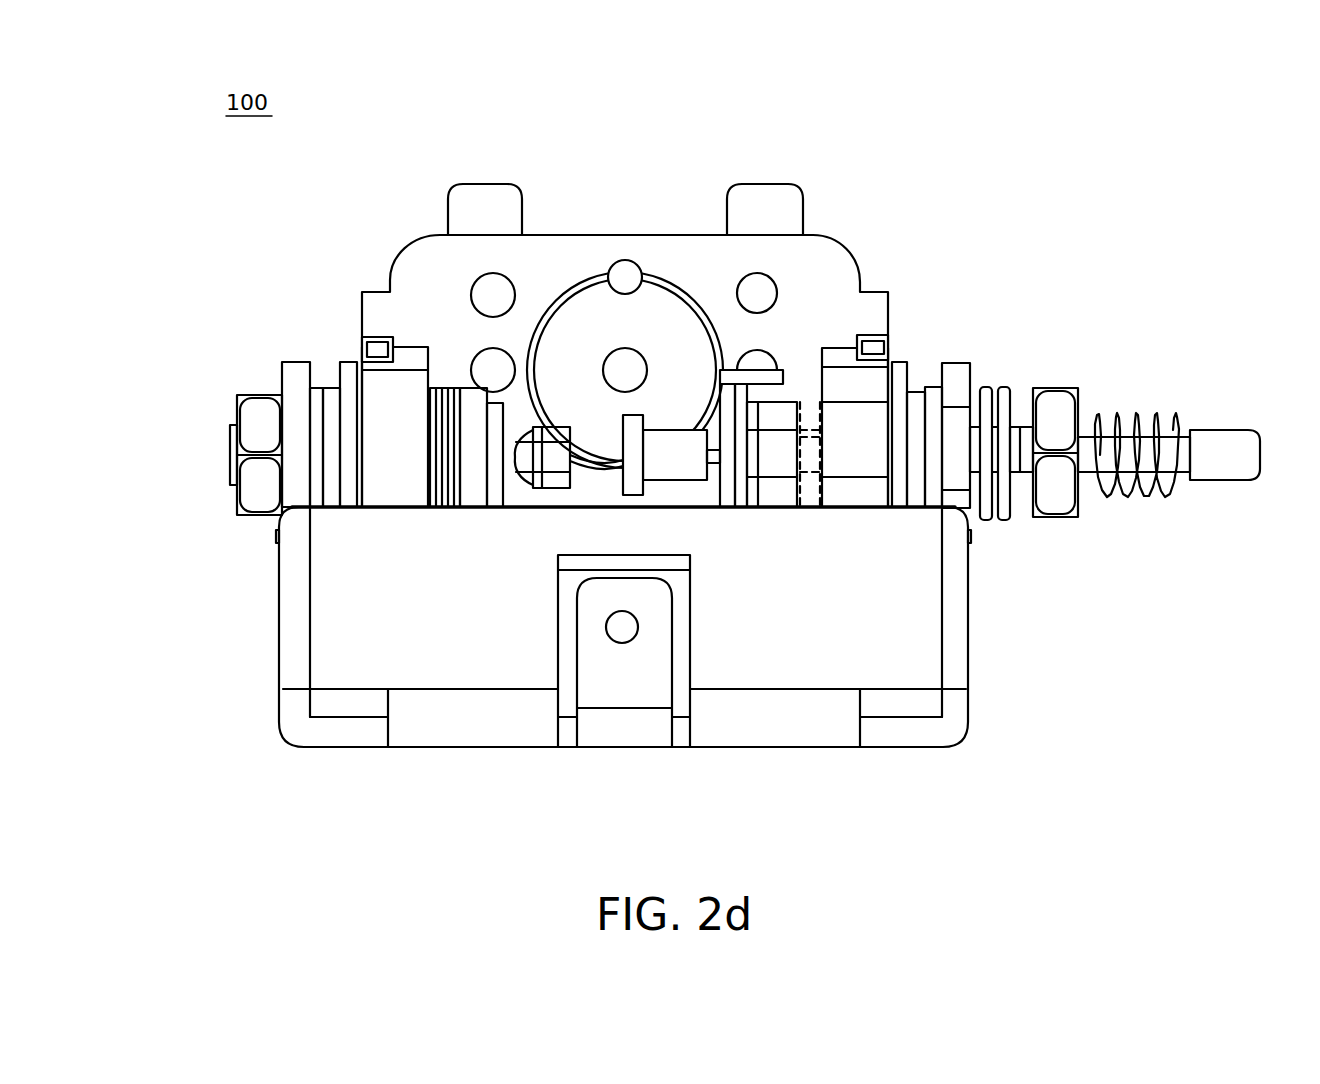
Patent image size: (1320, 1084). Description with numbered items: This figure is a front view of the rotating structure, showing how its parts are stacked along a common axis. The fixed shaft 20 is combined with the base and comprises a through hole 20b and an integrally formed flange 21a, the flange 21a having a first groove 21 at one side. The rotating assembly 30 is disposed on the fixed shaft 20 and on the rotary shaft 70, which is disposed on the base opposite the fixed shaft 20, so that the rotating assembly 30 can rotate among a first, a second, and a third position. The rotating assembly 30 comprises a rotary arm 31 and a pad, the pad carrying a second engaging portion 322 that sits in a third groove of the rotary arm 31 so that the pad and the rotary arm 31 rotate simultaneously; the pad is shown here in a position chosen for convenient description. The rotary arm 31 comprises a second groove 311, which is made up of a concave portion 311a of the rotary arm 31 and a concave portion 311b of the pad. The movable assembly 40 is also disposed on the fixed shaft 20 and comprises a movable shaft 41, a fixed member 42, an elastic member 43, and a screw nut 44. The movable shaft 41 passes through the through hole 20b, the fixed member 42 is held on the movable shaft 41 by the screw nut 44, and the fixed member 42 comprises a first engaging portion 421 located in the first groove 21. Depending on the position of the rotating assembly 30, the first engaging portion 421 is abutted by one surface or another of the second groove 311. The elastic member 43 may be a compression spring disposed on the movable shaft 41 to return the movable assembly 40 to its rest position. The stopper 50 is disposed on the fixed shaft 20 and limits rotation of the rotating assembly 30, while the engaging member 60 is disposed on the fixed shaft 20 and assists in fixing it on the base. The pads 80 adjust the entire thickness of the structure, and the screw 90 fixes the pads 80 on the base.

The rotary shaft 70 is at (447, 403).
The screw nut 44 is at (553, 447).
The fixed member 42 is at (633, 425).
The first engaging portion 421 is at (673, 447).
The second engaging portion 322 is at (755, 370).
The rotary arm 31 is at (760, 247).
The first groove 21 is at (776, 447).
The flange 21a is at (805, 415).
The through hole 20b is at (815, 427).
The rotating assembly 30 is at (845, 297).
The fixed shaft 20 is at (827, 350).
The stopper 50 is at (903, 373).
The engaging member 60 is at (933, 397).
The pads 80 is at (1007, 398).
The screw 90 is at (1053, 403).
The movable assembly 40 is at (1097, 435).
The elastic member 43 is at (1133, 420).
The movable shaft 41 is at (1182, 437).
The concave portion of the pad 311b is at (727, 443).
The concave portion of the rotary arm 311a is at (857, 443).
The second groove 311 is at (897, 813).